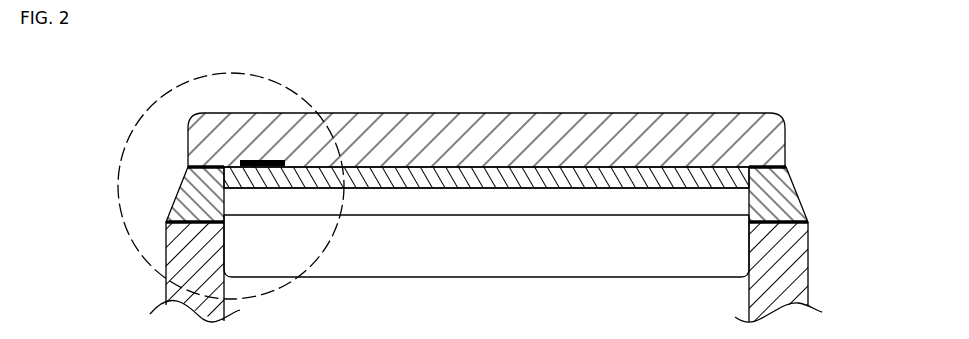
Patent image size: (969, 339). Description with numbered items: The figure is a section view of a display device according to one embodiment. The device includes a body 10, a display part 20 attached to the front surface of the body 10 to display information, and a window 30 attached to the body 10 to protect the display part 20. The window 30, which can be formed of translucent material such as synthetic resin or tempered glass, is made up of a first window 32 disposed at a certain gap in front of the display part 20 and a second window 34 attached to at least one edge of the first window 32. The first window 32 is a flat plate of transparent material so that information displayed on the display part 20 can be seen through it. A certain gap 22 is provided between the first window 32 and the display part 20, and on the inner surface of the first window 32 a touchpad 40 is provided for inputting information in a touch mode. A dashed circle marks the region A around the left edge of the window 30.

The enlarged region A is at (151, 109).
The body 10 is at (185, 267).
The display part 20 is at (348, 264).
The gap 22 is at (408, 210).
The window 30 is at (421, 167).
The first window 32 is at (196, 153).
The second window 34 is at (186, 205).
The touchpad 40 is at (388, 178).